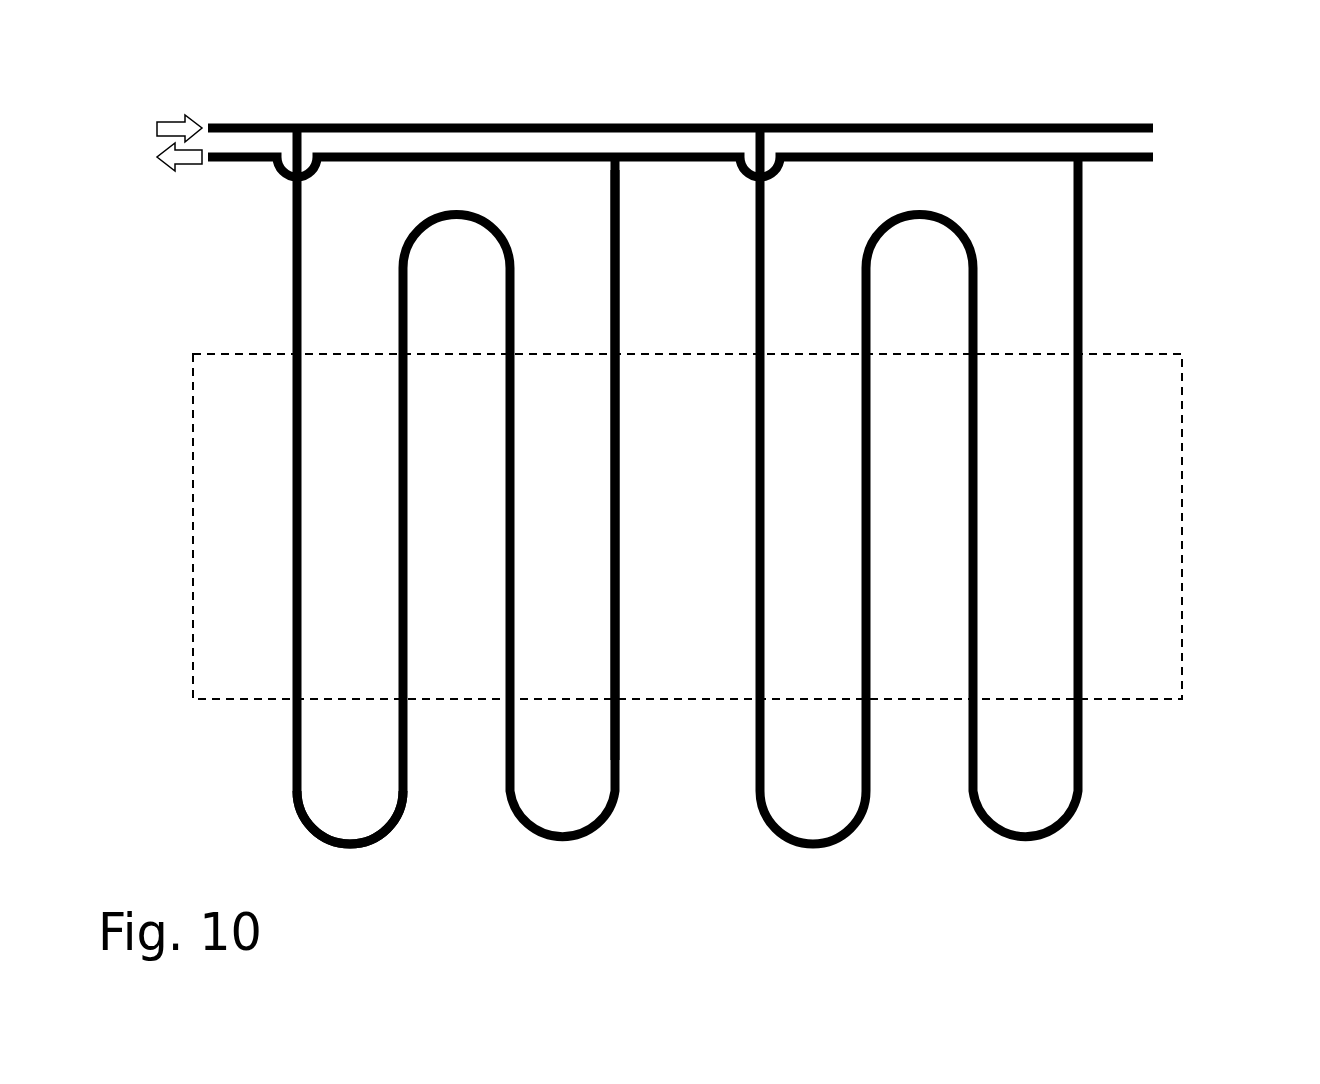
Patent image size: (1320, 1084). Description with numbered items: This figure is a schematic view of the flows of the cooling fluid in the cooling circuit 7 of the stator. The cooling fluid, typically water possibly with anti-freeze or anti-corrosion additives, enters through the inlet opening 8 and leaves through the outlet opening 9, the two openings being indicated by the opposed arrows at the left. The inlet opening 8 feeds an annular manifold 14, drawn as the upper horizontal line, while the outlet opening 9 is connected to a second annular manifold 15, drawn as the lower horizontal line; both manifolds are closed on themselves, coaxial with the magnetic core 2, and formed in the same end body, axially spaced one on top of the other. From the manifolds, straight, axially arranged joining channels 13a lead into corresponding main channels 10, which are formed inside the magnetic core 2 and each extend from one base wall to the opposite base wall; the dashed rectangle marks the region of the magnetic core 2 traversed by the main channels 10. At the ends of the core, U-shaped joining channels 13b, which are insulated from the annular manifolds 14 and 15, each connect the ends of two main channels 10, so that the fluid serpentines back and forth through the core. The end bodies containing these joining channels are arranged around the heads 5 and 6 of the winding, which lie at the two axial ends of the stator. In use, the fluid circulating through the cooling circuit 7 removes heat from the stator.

The magnetic core 2 is at (234, 640).
The head of the winding 5 is at (226, 295).
The head of the winding 6 is at (210, 787).
The cooling circuit 7 is at (1189, 859).
The inlet opening 8 is at (207, 112).
The outlet opening 9 is at (210, 178).
The main channels 10 is at (293, 519).
The straight joining channels 13a is at (619, 246).
The U-shaped joining channels 13b is at (343, 848).
The annular manifold 14 is at (994, 124).
The annular manifold 15 is at (826, 162).